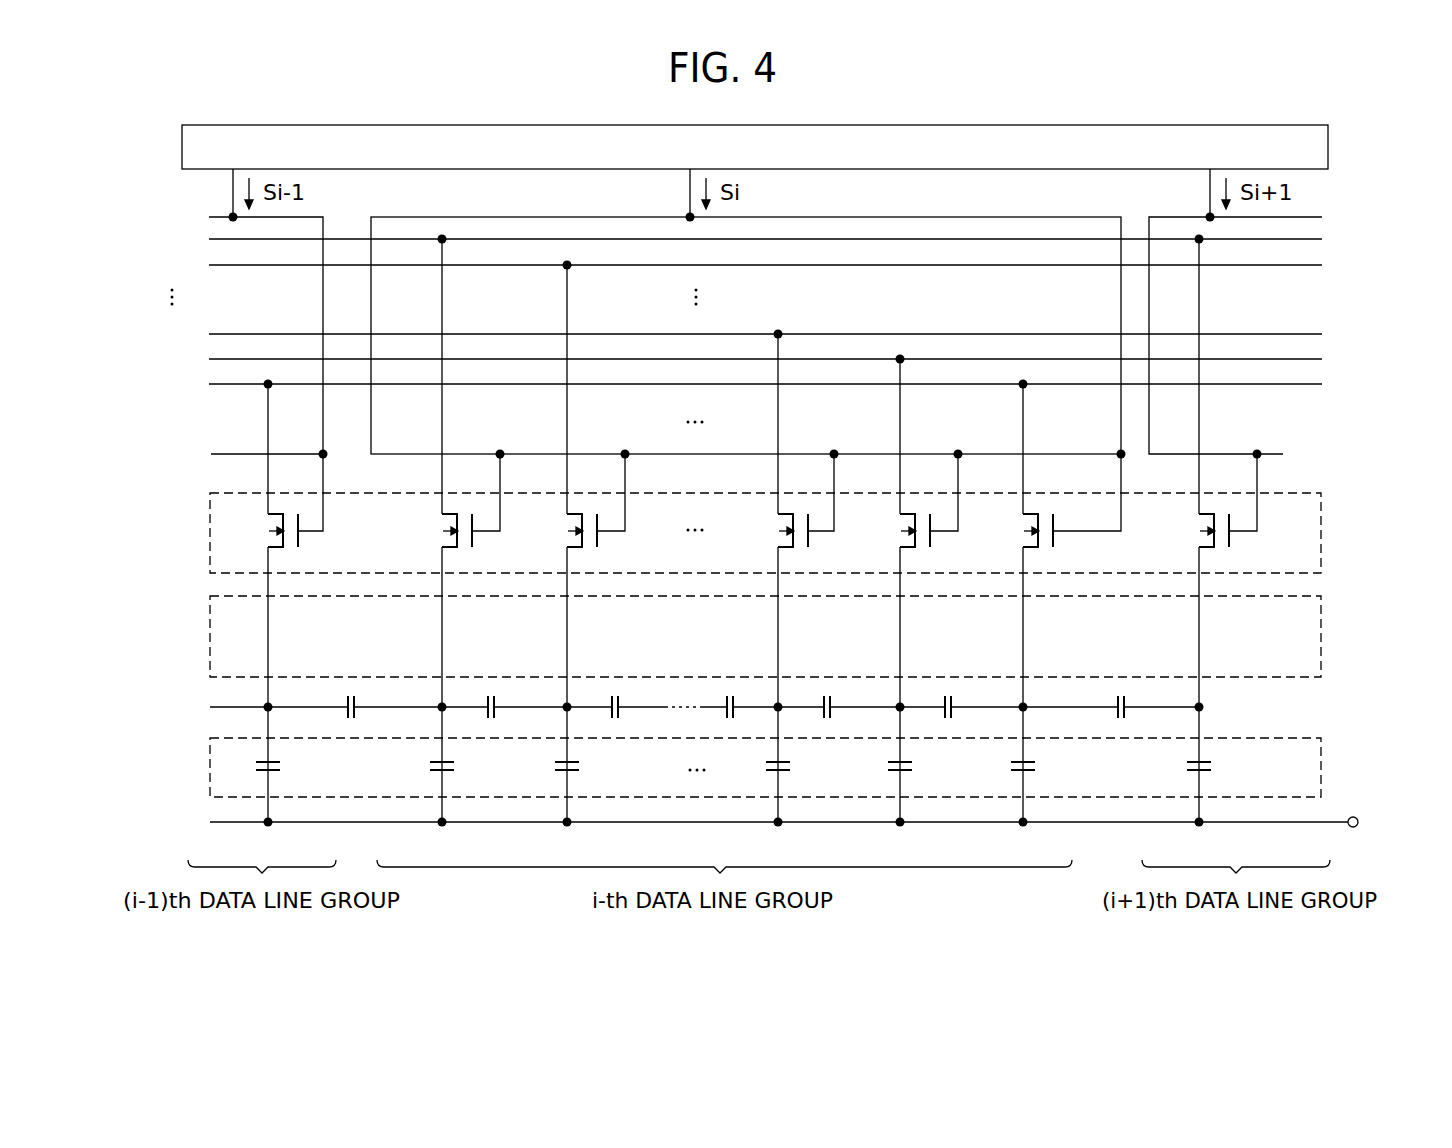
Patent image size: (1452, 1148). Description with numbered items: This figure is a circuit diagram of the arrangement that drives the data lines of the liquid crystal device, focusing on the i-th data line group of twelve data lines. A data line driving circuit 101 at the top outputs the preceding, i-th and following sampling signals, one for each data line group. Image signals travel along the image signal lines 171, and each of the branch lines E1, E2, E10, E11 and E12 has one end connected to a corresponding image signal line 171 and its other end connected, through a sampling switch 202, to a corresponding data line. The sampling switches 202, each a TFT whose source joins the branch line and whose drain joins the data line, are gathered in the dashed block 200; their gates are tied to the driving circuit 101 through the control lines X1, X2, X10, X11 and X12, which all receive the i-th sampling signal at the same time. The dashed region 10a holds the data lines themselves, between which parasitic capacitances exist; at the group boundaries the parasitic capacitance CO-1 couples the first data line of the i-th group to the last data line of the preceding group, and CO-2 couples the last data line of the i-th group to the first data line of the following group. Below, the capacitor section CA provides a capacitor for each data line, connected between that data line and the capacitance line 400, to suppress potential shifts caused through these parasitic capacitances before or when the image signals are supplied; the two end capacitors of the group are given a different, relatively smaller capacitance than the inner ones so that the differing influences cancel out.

The data line driving circuit 101 is at (1328, 152).
The image signal lines 171 is at (1333, 229).
The sampling circuit 200 is at (808, 534).
The element substrate data line region 10a is at (1321, 630).
The sampling switch 202 is at (1040, 549).
The capacitor section CA is at (804, 767).
The capacitance line 400 is at (1273, 823).
The branch line E1 is at (444, 418).
The branch line E2 is at (569, 418).
The branch line E10 is at (780, 418).
The branch line E11 is at (902, 418).
The branch line E12 is at (1025, 418).
The control line X1 is at (500, 505).
The control line X2 is at (625, 505).
The control line X10 is at (834, 505).
The control line X11 is at (958, 505).
The control line X12 is at (1121, 505).
The parasitic capacitance CO-1 is at (351, 690).
The parasitic capacitance CO-2 is at (1121, 690).